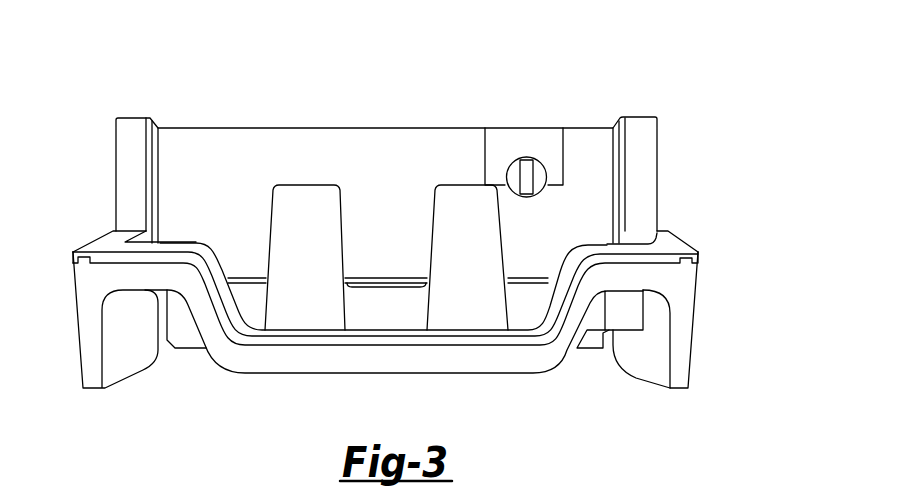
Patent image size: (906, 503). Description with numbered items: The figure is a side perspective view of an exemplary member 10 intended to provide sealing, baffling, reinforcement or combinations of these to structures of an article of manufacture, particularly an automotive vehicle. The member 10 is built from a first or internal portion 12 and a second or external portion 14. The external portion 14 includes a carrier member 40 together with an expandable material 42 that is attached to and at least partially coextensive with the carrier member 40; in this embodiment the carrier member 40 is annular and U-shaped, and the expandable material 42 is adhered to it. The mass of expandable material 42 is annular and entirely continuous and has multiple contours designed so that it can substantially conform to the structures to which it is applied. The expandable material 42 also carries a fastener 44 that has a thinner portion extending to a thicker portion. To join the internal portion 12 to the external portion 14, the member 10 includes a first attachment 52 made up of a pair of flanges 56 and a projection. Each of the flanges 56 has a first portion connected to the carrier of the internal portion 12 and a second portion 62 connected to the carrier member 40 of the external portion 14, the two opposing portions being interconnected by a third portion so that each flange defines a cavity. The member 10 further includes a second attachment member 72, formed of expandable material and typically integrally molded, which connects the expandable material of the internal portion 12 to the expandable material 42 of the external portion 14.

The member 10 is at (705, 96).
The internal portion 12 is at (185, 368).
The external portion 14 is at (722, 252).
The carrier member 40 is at (124, 258).
The expandable material 42 is at (198, 148).
The fastener 44 is at (539, 150).
The first attachment 52 is at (250, 226).
The flanges 56 is at (462, 186).
The second portion 62 is at (448, 303).
The second attachment member 72 is at (633, 316).